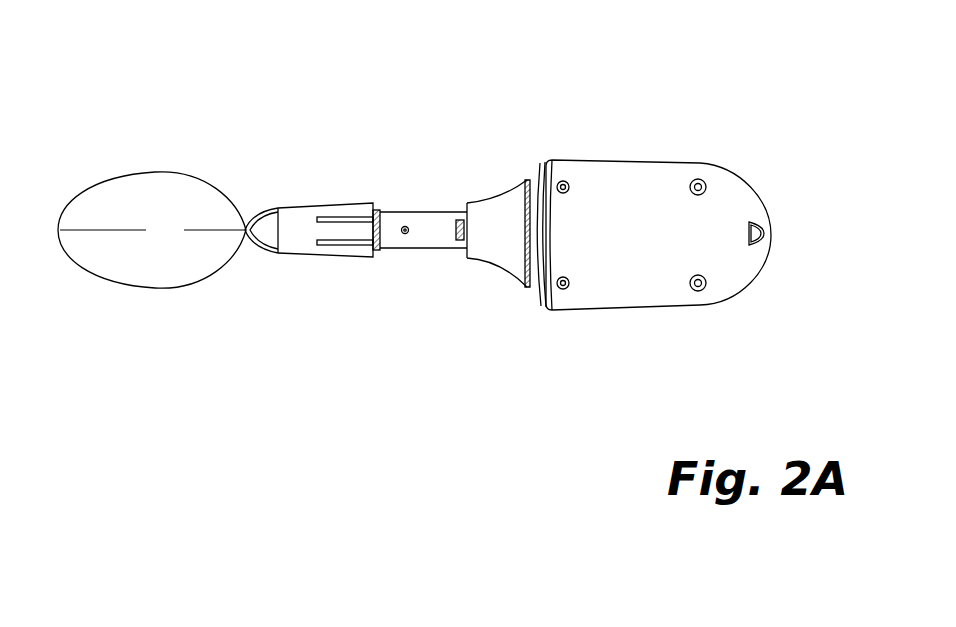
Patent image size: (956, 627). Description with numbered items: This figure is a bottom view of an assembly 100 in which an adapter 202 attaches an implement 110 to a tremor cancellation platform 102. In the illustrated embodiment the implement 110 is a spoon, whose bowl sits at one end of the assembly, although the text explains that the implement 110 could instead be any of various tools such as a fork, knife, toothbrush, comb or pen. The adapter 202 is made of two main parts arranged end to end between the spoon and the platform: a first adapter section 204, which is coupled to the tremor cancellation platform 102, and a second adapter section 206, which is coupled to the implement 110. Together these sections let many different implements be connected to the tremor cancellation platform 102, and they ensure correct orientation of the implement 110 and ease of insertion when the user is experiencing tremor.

The feeding utensil 100 is at (450, 52).
The tremor cancellation platform 102 is at (660, 241).
The implement 110 is at (180, 237).
The adapter 202 is at (473, 192).
The first adapter section 204 is at (418, 258).
The second adapter section 206 is at (320, 265).